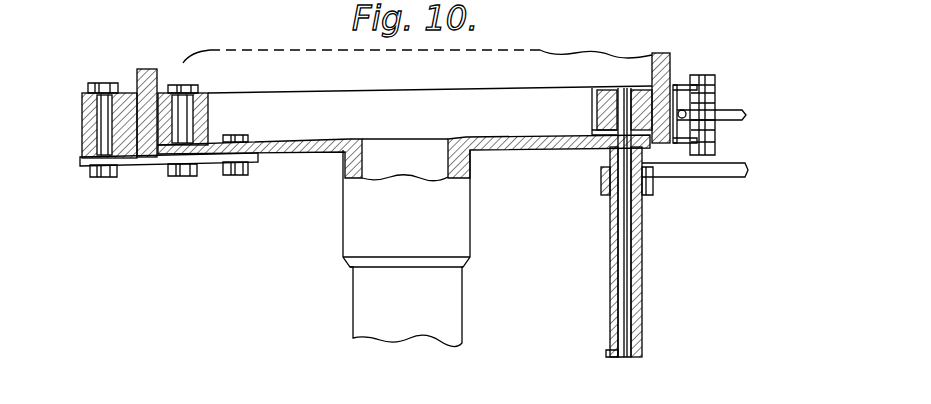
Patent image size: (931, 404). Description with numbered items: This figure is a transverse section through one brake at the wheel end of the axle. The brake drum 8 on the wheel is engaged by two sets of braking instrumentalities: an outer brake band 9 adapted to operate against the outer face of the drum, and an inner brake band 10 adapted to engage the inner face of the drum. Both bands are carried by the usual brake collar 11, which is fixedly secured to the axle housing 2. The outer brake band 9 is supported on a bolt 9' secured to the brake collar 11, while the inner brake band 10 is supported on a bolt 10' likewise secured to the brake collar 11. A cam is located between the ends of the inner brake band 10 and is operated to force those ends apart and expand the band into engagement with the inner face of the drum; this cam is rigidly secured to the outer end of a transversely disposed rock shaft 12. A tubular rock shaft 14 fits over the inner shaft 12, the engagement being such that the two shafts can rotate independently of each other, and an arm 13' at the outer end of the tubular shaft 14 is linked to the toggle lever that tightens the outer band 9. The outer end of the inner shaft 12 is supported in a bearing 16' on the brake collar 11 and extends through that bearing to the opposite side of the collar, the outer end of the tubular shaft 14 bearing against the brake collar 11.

The axle housing 2 is at (406, 248).
The brake drum 8 is at (148, 72).
The brake band 9 is at (97, 125).
The bolt 9' is at (81, 123).
The brake band 10 is at (183, 101).
The bolt 10' is at (211, 103).
The brake collar 11 is at (313, 155).
The rock shaft 12 is at (622, 231).
The arm 13' is at (695, 184).
The rock shaft 14 is at (646, 251).
The bearing 16' is at (587, 173).